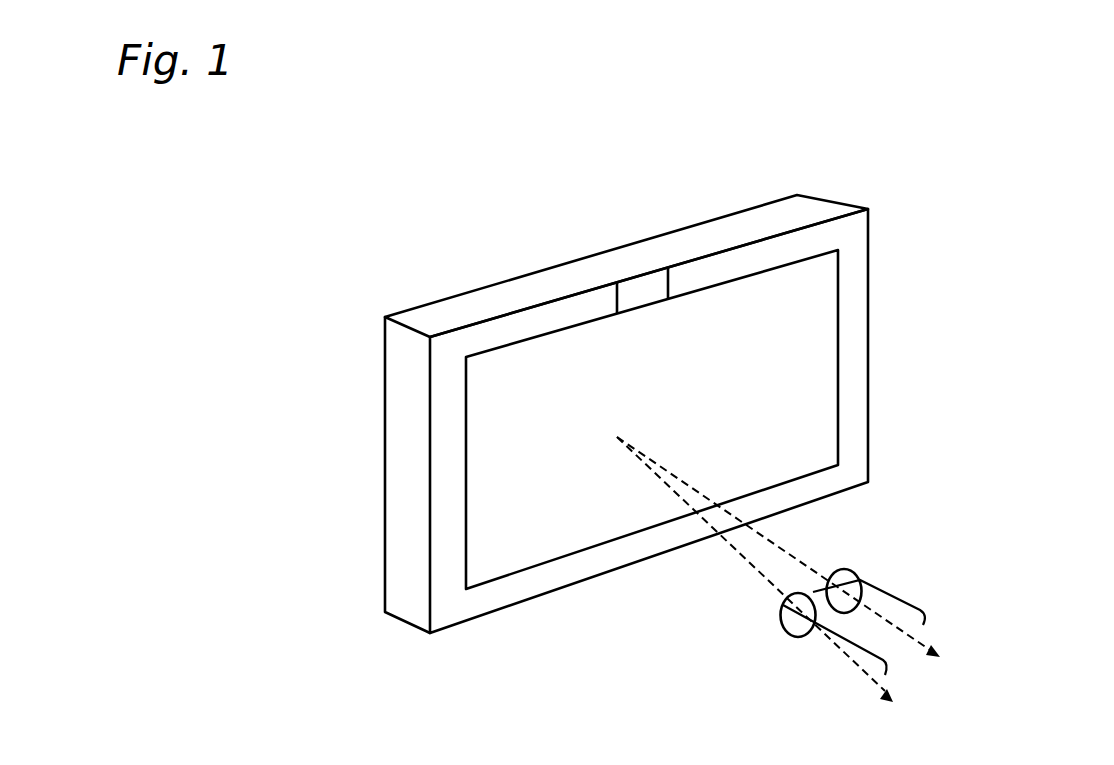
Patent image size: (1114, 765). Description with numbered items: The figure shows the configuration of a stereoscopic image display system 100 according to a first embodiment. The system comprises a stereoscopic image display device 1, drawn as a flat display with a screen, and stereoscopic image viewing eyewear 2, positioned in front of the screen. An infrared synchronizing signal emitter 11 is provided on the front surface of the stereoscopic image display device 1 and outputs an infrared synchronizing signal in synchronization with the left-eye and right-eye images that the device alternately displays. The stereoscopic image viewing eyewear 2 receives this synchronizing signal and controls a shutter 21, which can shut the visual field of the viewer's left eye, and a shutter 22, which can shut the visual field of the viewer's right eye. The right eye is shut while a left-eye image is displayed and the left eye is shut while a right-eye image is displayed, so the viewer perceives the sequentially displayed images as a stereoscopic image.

The stereoscopic image display device 1 is at (500, 280).
The infrared synchronizing signal emitter 11 is at (633, 278).
The stereoscopic image display system 100 is at (1090, 372).
The stereoscopic image viewing eyewear 2 is at (856, 609).
The shutter 21 is at (781, 626).
The shutter 22 is at (860, 580).